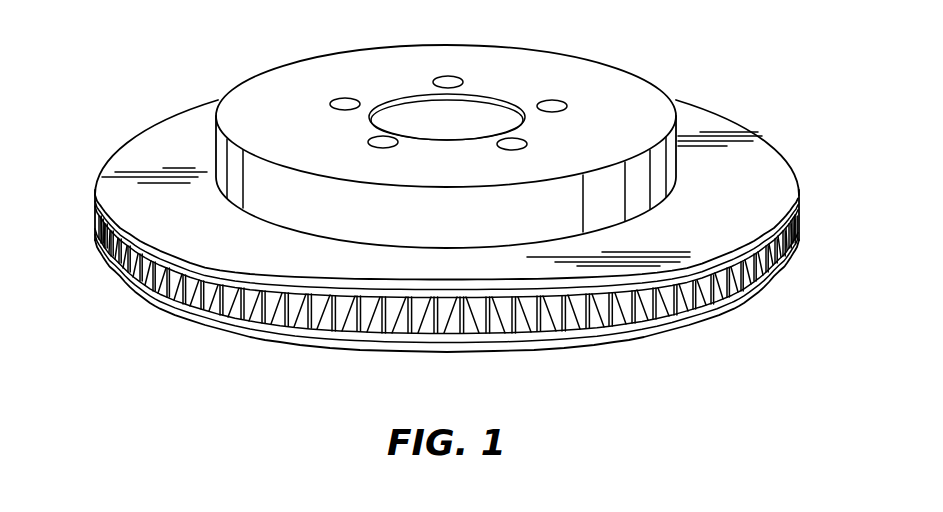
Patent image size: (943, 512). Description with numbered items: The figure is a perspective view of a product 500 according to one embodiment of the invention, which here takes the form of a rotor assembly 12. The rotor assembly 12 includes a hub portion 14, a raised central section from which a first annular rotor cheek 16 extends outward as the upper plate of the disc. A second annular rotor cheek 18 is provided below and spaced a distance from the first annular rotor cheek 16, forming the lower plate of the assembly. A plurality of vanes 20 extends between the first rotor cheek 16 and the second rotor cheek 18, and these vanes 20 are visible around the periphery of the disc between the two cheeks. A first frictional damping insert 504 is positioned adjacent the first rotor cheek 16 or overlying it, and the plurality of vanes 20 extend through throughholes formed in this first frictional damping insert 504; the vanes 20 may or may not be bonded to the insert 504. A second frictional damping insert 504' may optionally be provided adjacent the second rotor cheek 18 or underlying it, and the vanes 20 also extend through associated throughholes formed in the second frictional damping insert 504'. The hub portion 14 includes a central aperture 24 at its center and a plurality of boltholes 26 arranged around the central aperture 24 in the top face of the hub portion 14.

The product 500 is at (141, 88).
The rotor assembly 12 is at (252, 50).
The hub portion 14 is at (592, 74).
The first annular rotor cheek 16 is at (723, 113).
The second annular rotor cheek 18 is at (739, 326).
The vanes 20 is at (598, 306).
The central aperture 24 is at (385, 130).
The boltholes 26 is at (444, 85).
The first frictional damping insert 504 is at (271, 340).
The second frictional damping insert 504' is at (390, 349).